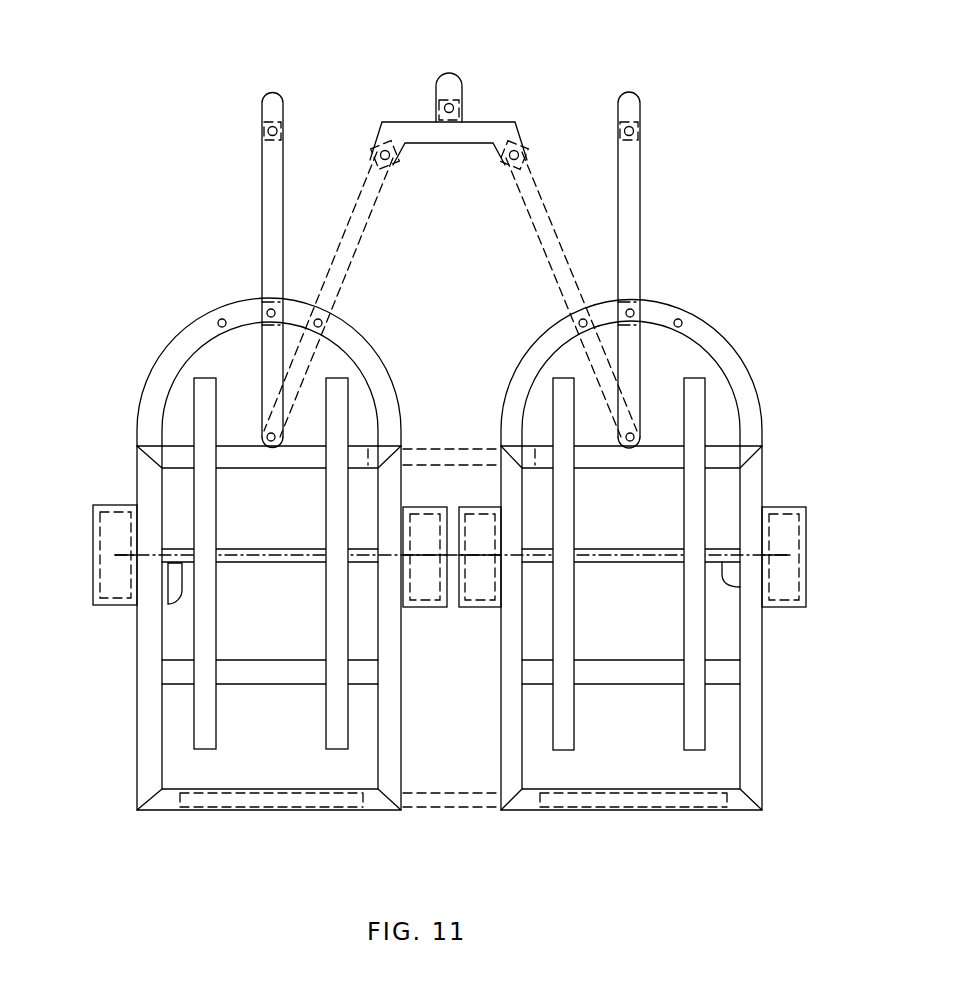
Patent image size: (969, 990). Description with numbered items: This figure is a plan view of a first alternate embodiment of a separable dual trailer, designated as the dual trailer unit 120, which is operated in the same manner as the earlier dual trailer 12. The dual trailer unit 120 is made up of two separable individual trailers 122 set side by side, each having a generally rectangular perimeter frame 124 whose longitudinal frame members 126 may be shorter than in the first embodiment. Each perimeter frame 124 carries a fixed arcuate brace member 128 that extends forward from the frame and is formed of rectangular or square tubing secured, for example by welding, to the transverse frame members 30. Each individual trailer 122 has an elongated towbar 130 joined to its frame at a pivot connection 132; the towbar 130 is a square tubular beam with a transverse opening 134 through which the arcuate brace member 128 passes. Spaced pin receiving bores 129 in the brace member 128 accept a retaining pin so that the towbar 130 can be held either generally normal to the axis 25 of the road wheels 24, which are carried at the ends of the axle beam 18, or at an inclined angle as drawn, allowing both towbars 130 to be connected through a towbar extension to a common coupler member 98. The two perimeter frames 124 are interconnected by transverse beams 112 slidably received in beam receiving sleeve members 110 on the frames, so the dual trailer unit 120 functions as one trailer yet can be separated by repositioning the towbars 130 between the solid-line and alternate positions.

The dual trailer unit 120 is at (742, 90).
The individual trailer 122 is at (103, 410).
The perimeter frame 124 is at (137, 752).
The longitudinal frame member 126 is at (500, 662).
The arcuate brace member 128 is at (381, 352).
The pin receiving bore 129 is at (218, 323).
The towbar 130 is at (262, 157).
The pivot connection 132 is at (277, 447).
The transverse opening 134 is at (280, 312).
The coupler member 98 is at (466, 121).
The sleeve member 110 is at (367, 447).
The transverse beam 112 is at (423, 448).
The transverse frame member 30 is at (232, 468).
The road wheel 24 is at (97, 571).
The axis 25 is at (181, 566).
The axle beam 18 is at (249, 563).
The dual trailer 12 is at (272, 290).